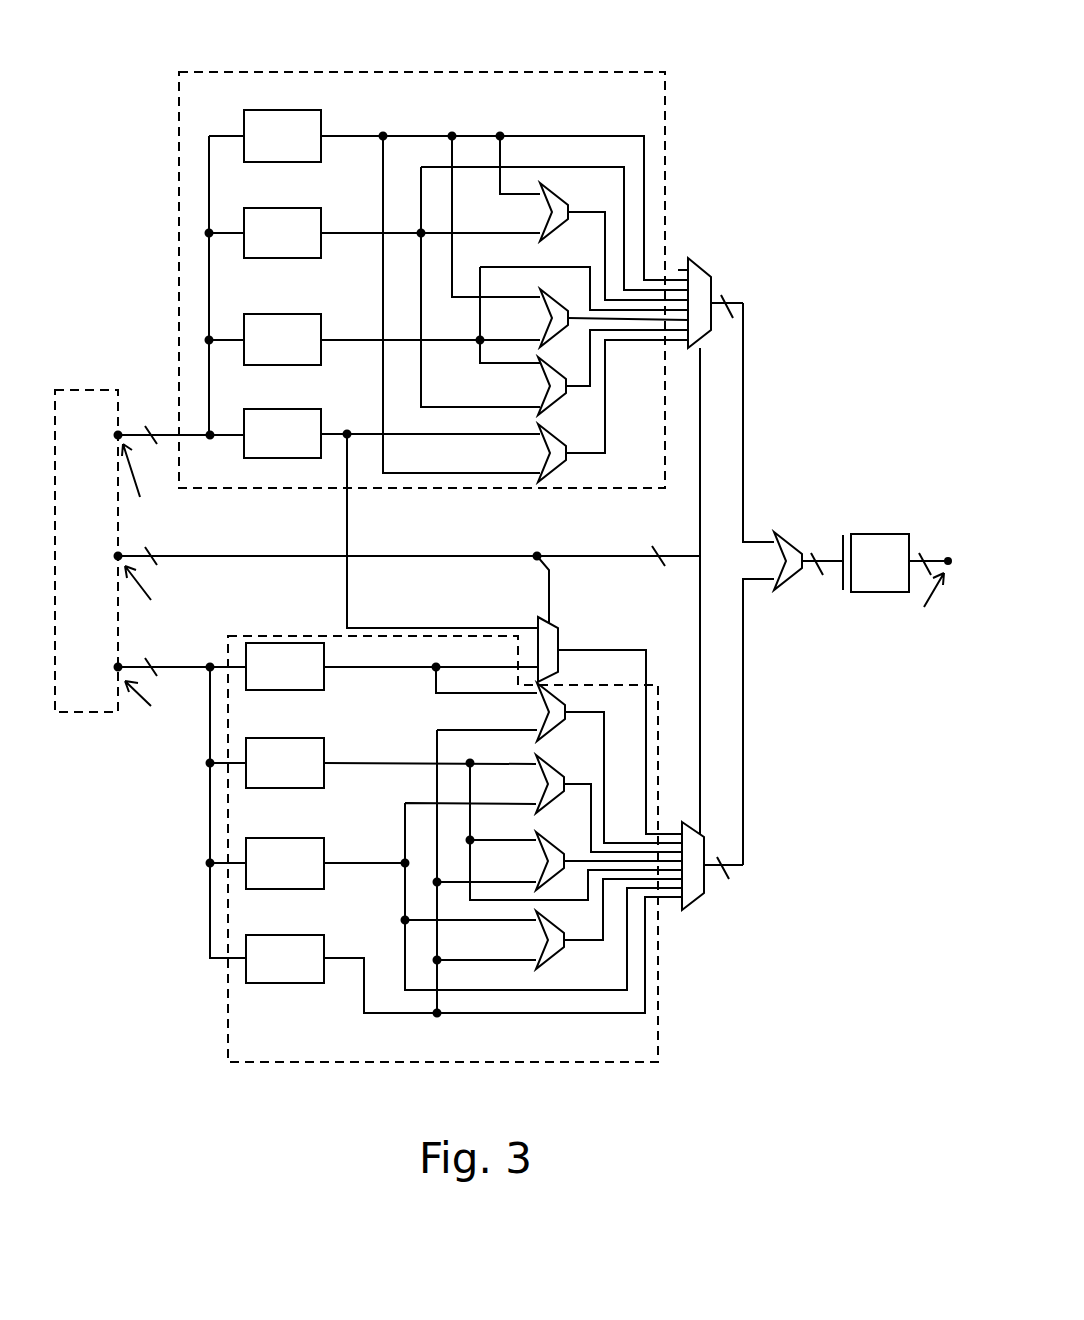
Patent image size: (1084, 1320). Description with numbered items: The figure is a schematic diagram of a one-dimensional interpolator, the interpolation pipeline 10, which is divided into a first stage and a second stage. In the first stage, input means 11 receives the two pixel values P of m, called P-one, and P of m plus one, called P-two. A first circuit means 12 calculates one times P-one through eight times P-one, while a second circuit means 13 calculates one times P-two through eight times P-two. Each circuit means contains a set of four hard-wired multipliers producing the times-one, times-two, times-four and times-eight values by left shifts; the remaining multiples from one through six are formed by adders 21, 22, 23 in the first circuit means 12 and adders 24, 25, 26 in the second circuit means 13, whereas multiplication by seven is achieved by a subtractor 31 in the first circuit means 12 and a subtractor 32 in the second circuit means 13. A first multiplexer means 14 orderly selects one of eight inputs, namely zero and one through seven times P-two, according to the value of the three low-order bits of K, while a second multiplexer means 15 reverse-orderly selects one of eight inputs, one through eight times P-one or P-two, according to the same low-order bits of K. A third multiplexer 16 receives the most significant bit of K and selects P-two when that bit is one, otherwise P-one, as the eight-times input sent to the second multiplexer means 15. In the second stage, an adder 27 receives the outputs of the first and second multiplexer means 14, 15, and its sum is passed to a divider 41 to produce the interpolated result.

The interpolation pipeline 10 is at (635, 41).
The input means 11 is at (98, 558).
The first circuit means 12 is at (227, 1032).
The second circuit means 13 is at (411, 72).
The first multiplexer means 14 is at (704, 266).
The second multiplexer means 15 is at (690, 906).
The third multiplexer 16 is at (558, 628).
The adder 21 is at (535, 930).
The adder 22 is at (535, 851).
The adder 23 is at (535, 774).
The adder 24 is at (537, 402).
The adder 25 is at (539, 336).
The adder 26 is at (539, 233).
The adder 27 is at (797, 548).
The subtractor 31 is at (536, 704).
The subtractor 32 is at (537, 471).
The divider 41 is at (872, 534).